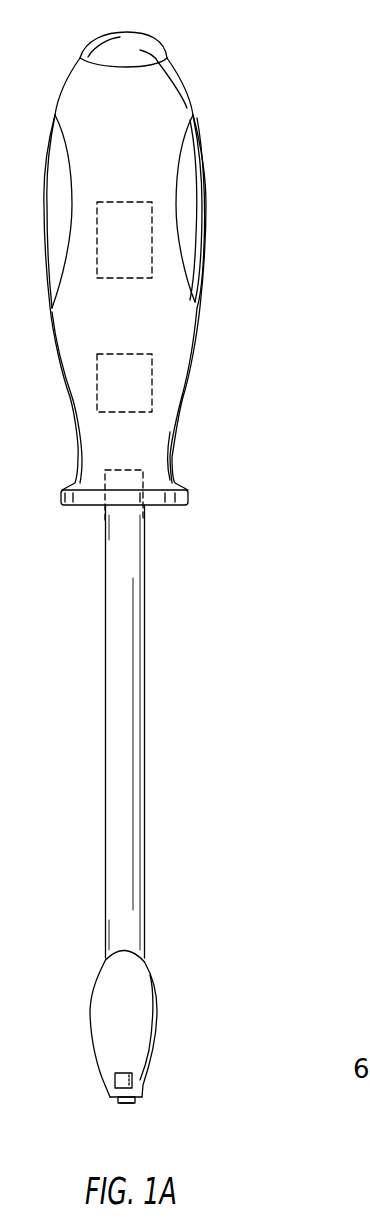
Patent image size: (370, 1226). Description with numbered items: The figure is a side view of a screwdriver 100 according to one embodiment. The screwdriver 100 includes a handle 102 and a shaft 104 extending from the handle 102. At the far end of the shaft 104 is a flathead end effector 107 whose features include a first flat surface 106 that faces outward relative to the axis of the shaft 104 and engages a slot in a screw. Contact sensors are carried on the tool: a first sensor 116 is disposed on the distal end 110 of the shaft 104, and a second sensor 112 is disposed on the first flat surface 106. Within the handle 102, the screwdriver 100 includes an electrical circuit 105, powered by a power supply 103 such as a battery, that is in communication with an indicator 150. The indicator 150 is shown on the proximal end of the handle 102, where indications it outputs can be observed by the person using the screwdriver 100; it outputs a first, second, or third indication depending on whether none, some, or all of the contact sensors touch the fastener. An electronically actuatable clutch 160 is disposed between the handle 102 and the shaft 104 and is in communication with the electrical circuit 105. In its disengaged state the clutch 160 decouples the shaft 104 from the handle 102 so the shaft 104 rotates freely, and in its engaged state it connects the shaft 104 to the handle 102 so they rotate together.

The screwdriver 100 is at (256, 80).
The handle 102 is at (177, 358).
The power supply 103 is at (117, 262).
The shaft 104 is at (127, 695).
The electrical circuit 105 is at (140, 388).
The first flat surface 106 is at (133, 1038).
The end effector 107 is at (247, 1005).
The distal end 110 is at (136, 1103).
The second sensor 112 is at (135, 1082).
The first sensor 116 is at (120, 1104).
The indicator 150 is at (132, 43).
The electronically actuatable clutch 160 is at (132, 485).